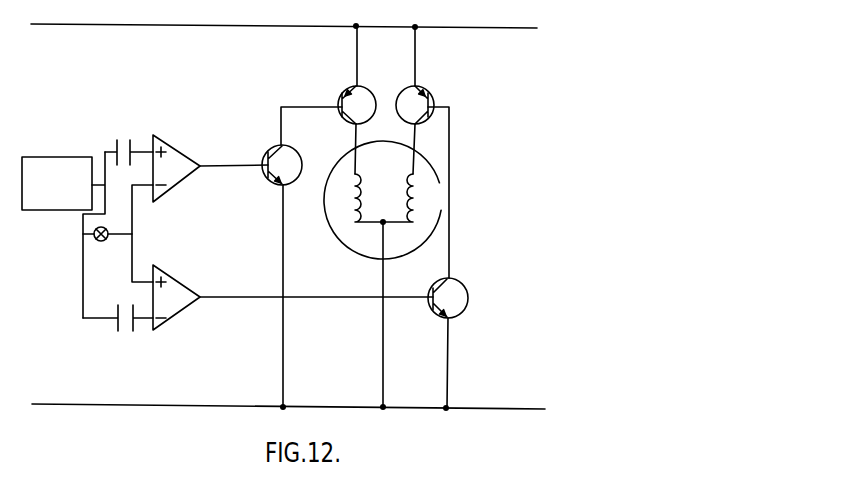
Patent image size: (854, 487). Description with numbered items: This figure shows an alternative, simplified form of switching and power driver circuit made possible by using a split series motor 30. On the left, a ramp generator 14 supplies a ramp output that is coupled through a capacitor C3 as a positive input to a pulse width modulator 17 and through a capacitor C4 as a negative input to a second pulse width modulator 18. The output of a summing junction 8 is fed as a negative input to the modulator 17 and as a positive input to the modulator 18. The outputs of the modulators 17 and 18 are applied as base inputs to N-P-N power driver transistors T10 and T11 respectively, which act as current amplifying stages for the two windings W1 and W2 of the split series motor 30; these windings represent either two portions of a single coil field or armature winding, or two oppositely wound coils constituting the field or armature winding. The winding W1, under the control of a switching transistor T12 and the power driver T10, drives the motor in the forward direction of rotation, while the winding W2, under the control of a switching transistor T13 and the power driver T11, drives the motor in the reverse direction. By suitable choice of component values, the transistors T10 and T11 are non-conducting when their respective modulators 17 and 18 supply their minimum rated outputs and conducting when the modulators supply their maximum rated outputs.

The ramp generator 14 is at (63, 157).
The summing junction 8 is at (97, 241).
The capacitor C3 is at (129, 137).
The capacitor C4 is at (118, 330).
The pulse width modulator 17 is at (176, 153).
The pulse width modulator 18 is at (171, 310).
The power driver transistor T10 is at (289, 257).
The power driver transistor T11 is at (462, 343).
The switching transistor T12 is at (350, 100).
The switching transistor T13 is at (422, 152).
The split series motor 30 is at (348, 234).
The winding W1 is at (370, 198).
The winding W2 is at (414, 198).